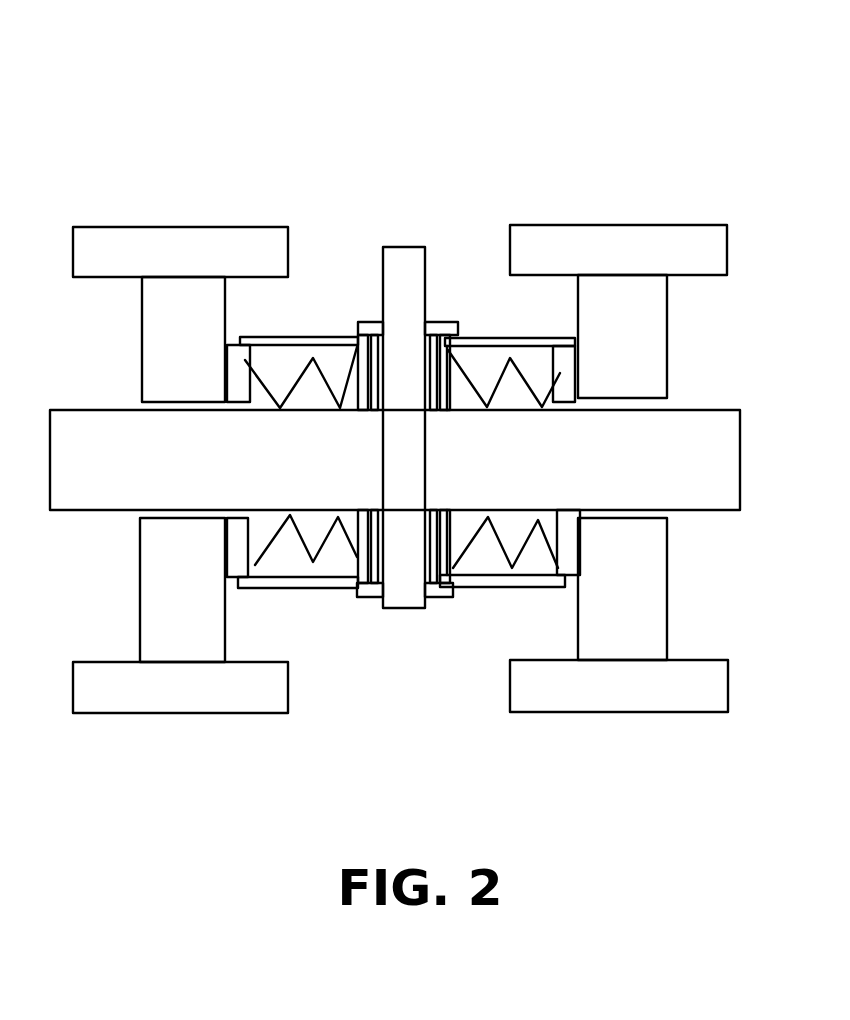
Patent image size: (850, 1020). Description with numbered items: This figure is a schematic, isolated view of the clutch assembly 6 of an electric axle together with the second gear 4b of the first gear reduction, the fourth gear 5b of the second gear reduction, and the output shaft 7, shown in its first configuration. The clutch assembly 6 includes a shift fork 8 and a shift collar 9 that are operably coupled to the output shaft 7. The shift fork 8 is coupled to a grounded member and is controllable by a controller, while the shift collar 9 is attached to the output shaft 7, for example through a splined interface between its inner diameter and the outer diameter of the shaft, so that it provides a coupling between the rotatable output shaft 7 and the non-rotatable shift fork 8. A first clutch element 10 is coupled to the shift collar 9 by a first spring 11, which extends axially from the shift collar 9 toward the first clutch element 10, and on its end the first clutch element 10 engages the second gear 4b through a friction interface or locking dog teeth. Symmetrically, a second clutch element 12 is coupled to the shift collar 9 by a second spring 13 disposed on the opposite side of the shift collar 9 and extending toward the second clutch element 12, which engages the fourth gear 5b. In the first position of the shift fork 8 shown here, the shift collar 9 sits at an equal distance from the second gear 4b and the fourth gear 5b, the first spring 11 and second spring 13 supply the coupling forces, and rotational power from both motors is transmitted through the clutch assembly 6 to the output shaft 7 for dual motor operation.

The second gear 4b is at (115, 227).
The fourth gear 5b is at (620, 225).
The clutch assembly 6 is at (403, 118).
The output shaft 7 is at (740, 410).
The shift fork 8 is at (400, 608).
The shift collar 9 is at (358, 597).
The first clutch element 10 is at (243, 358).
The first spring 11 is at (296, 540).
The second clutch element 12 is at (553, 357).
The second spring 13 is at (492, 553).